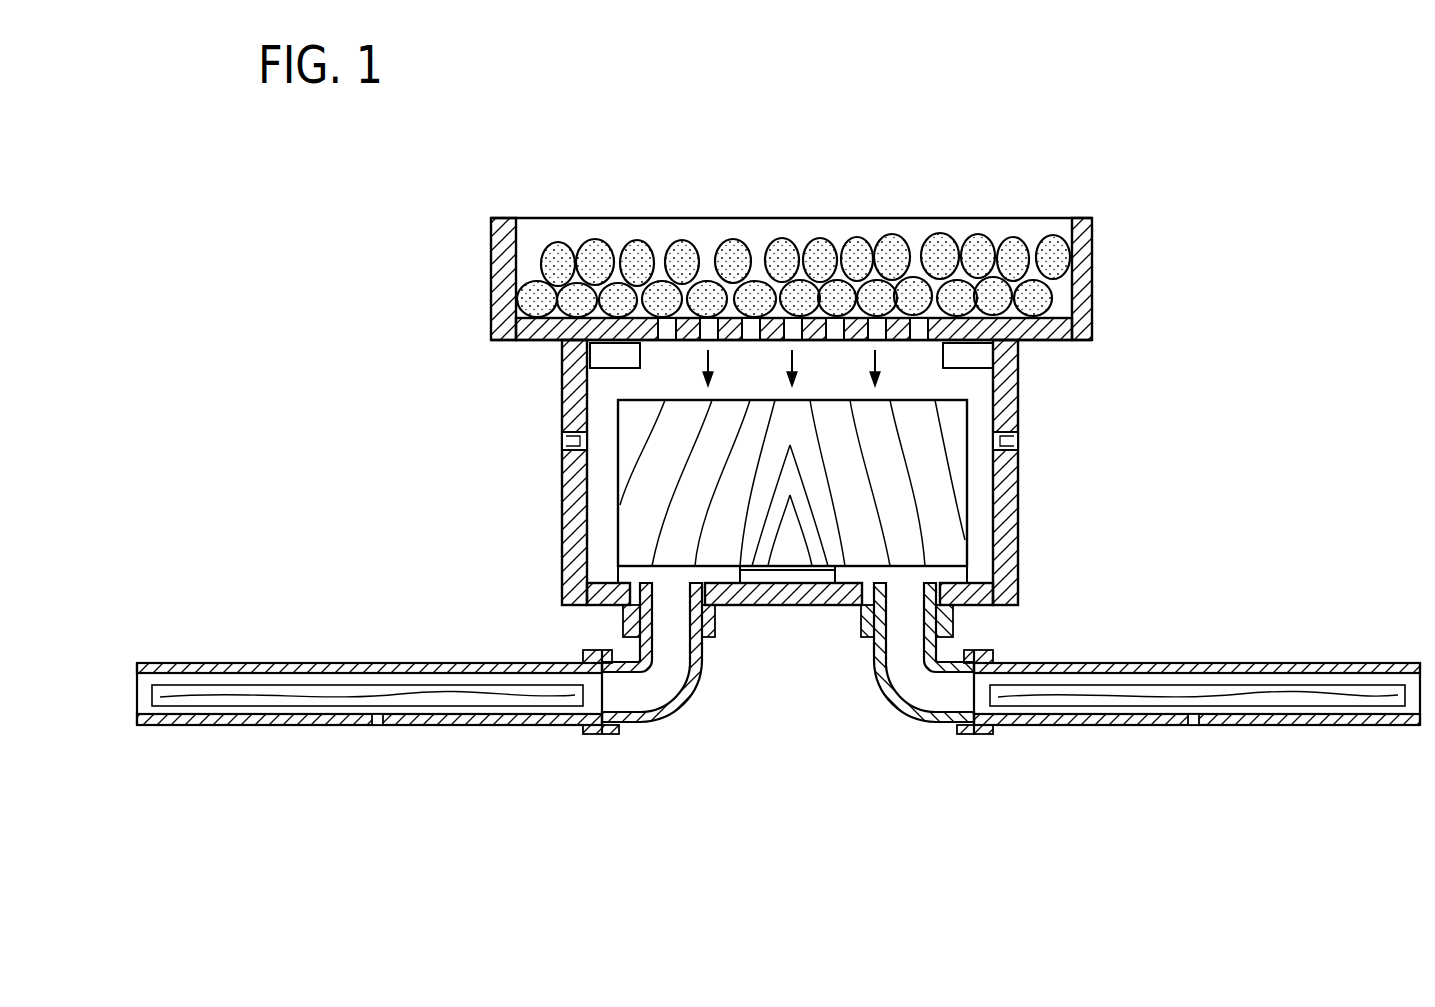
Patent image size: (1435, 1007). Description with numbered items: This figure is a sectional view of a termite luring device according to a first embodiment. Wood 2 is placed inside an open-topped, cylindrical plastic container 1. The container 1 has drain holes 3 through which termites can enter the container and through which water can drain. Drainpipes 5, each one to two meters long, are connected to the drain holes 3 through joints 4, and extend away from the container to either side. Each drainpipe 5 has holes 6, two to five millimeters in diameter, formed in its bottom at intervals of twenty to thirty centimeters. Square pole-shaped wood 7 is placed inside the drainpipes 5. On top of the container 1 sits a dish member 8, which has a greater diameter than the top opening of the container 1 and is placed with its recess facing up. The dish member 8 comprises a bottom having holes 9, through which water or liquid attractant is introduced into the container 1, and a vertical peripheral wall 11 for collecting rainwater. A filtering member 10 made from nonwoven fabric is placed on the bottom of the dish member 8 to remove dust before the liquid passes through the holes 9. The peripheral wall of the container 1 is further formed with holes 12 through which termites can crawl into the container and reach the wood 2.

The container 1 is at (1012, 486).
The wood 2 is at (950, 532).
The drain holes 3 is at (913, 607).
The joints 4 is at (698, 688).
The drainpipes 5 is at (392, 668).
The holes 6 is at (377, 725).
The square pole-shaped wood 7 is at (300, 692).
The dish member 8 is at (805, 218).
The holes 9 is at (913, 340).
The filtering member 10 is at (930, 248).
The vertical peripheral wall 11 is at (1093, 262).
The holes 12 is at (565, 440).